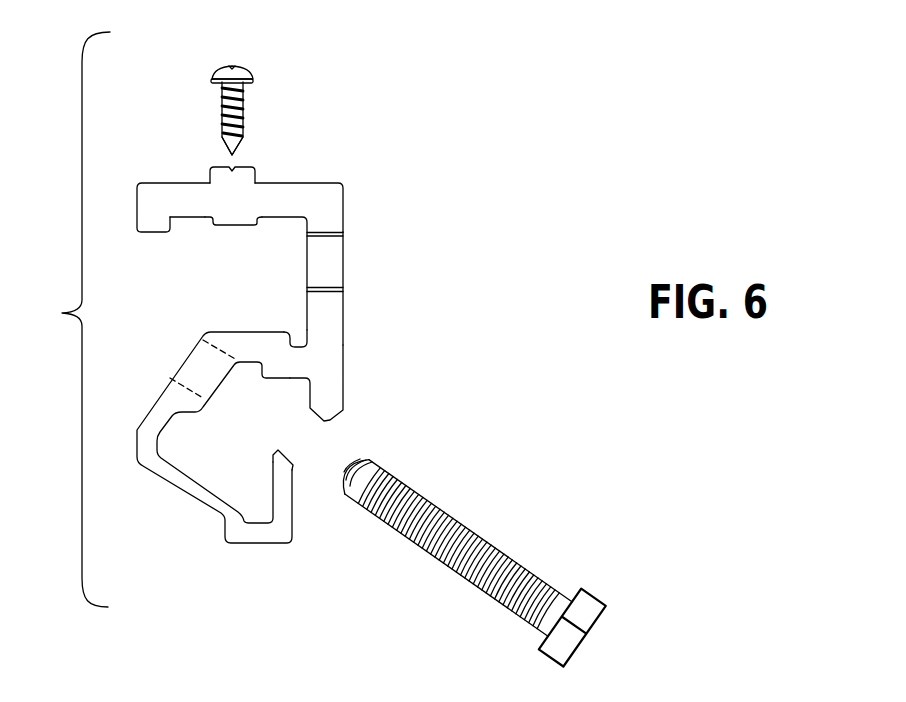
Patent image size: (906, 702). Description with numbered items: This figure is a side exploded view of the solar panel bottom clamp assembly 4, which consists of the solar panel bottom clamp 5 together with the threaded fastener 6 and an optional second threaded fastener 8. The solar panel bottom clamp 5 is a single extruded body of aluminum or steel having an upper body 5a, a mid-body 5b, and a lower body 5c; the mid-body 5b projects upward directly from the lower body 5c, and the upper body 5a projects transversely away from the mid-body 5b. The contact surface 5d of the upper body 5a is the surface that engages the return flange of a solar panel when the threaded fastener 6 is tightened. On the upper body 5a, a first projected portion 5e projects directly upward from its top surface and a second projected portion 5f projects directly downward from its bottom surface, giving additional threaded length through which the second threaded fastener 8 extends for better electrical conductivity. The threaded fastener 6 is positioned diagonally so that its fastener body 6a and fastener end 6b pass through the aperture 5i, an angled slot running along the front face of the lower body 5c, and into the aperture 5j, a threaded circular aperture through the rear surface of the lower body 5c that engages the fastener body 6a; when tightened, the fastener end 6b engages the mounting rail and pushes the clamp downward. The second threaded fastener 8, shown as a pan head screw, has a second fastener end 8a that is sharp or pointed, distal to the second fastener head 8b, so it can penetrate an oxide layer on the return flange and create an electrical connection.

The solar panel bottom clamp assembly 4 is at (71, 319).
The solar panel bottom clamp 5 is at (350, 312).
The upper body 5a is at (314, 184).
The mid-body 5b is at (344, 358).
The lower body 5c is at (224, 331).
The contact surface 5d is at (151, 233).
The first projected portion 5e is at (216, 164).
The second projected portion 5f is at (231, 226).
The aperture 5i is at (310, 445).
The aperture 5j is at (190, 388).
The threaded fastener 6 is at (506, 552).
The fastener body 6a is at (464, 524).
The fastener end 6b is at (365, 463).
The second threaded fastener 8 is at (210, 99).
The second fastener end 8a is at (241, 146).
The second fastener head 8b is at (248, 70).